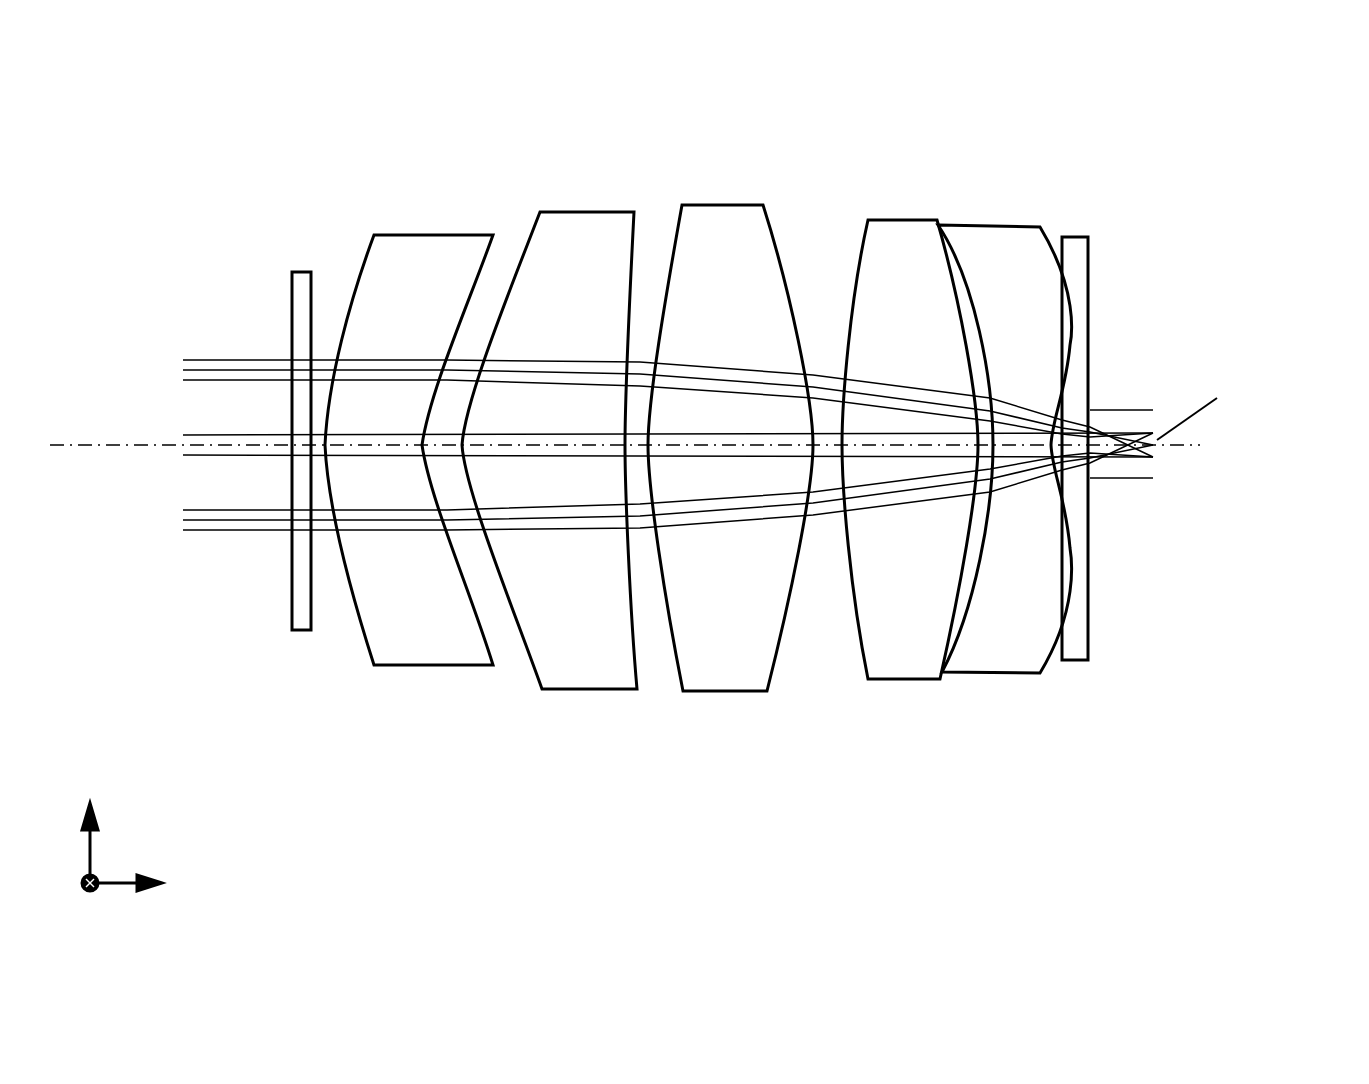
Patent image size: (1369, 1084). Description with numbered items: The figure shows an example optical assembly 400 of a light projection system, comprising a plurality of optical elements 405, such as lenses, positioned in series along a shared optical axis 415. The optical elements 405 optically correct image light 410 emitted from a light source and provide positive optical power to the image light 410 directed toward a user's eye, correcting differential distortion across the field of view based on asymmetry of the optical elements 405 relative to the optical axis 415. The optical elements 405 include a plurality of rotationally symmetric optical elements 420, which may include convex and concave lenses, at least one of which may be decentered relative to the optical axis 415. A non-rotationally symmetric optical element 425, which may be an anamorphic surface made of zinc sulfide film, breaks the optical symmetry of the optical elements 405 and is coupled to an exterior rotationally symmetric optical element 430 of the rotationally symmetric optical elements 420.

The optical assembly 400 is at (55, 63).
The optical elements 405 is at (292, 223).
The image light 410 is at (1110, 480).
The optical axis 415 is at (95, 450).
The rotationally symmetric optical elements 420 is at (542, 720).
The non-rotationally symmetric optical element 425 is at (1090, 338).
The exterior rotationally symmetric optical element 430 is at (1012, 652).